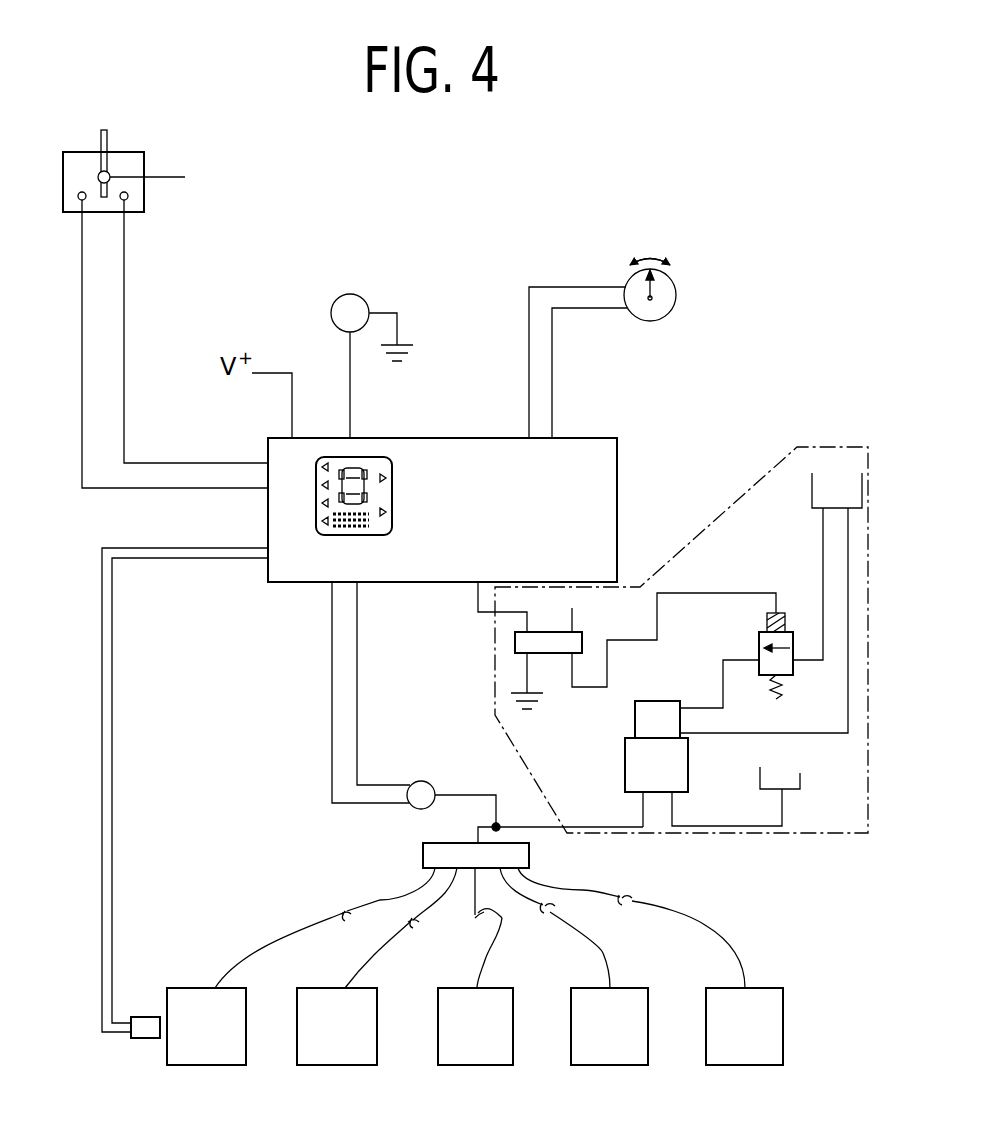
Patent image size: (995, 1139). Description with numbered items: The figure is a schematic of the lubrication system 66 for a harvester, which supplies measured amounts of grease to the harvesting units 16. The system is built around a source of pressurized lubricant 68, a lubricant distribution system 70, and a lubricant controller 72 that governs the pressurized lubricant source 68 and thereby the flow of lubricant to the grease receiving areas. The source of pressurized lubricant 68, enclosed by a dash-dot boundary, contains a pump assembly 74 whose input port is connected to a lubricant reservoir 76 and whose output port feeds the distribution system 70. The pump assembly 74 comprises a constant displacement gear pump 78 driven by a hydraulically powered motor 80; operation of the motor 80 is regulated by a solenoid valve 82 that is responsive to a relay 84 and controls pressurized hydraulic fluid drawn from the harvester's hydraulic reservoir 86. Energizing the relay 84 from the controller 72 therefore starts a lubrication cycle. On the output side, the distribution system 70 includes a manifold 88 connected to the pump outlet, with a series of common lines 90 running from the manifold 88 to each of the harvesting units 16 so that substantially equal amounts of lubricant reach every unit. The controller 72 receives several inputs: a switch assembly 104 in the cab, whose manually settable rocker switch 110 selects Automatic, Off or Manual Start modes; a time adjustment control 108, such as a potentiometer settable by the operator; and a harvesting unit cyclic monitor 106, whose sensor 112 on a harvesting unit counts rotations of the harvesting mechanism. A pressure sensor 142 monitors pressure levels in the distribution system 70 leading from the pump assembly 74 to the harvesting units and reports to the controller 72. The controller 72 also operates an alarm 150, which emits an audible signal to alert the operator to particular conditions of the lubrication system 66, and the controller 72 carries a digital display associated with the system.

The harvesting unit 16 is at (218, 1040).
The lubrication system 66 is at (687, 386).
The source of pressurized lubricant 68 is at (758, 486).
The lubricant distribution system 70 is at (577, 884).
The lubricant controller 72 is at (453, 436).
The pump assembly 74 is at (614, 758).
The lubricant reservoir 76 is at (800, 778).
The constant displacement gear pump 78 is at (675, 777).
The hydraulically powered motor 80 is at (652, 705).
The solenoid valve 82 is at (795, 673).
The relay 84 is at (568, 642).
The hydraulic reservoir 86 is at (814, 490).
The manifold 88 is at (426, 857).
The common line 90 is at (235, 962).
The switch assembly 104 is at (122, 150).
The harvesting unit cyclic monitor 106 is at (142, 1041).
The time adjustment control 108 is at (680, 296).
The rocker switch 110 is at (83, 165).
The sensor 112 is at (147, 1025).
The pressure sensor 142 is at (419, 790).
The alarm 150 is at (362, 301).